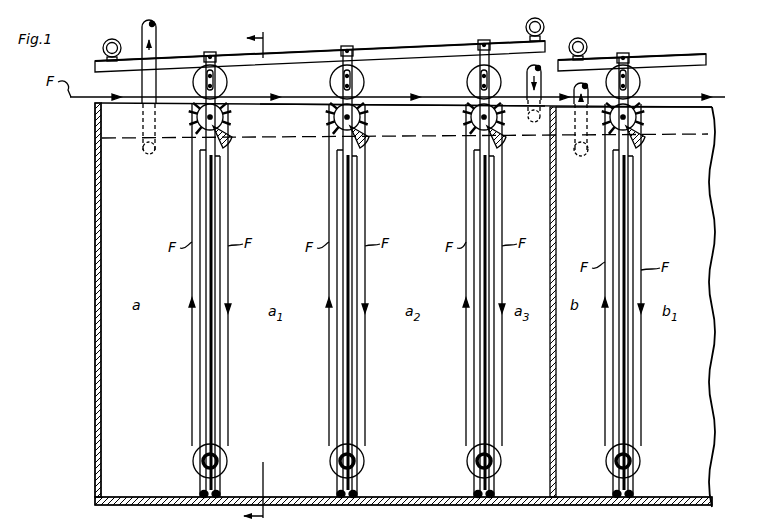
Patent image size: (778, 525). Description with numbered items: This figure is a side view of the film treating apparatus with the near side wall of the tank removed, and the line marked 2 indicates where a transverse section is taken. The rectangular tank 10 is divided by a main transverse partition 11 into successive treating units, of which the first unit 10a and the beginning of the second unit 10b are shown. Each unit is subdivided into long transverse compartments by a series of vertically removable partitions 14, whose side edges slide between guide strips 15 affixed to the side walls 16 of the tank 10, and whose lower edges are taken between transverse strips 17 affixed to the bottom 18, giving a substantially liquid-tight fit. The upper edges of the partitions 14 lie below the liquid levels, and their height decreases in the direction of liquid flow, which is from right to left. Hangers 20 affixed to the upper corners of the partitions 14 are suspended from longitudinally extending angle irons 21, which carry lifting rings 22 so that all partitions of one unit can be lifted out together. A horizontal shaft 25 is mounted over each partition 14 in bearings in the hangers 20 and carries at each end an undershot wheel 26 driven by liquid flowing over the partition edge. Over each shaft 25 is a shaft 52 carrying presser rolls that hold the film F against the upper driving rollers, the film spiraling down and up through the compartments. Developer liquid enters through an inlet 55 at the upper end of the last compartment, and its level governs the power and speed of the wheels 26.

The tank 10 is at (92, 186).
The first treating unit 10a is at (407, 104).
The second treating unit 10b is at (693, 105).
The main transverse partition 11 is at (556, 254).
The vertical partition 14 is at (212, 288).
The guide strip 15 is at (216, 386).
The side wall 16 is at (128, 248).
The transverse strip 17 is at (216, 492).
The tank bottom 18 is at (190, 502).
The hanger 20 is at (226, 86).
The angle iron 21 is at (457, 48).
The lifting ring 22 is at (113, 39).
The horizontal shaft 25 is at (351, 116).
The undershot wheel 26 is at (195, 88).
The presser roll shaft 52 is at (215, 56).
The inlet 55 is at (540, 68).
The section line 2- 2 is at (269, 278).